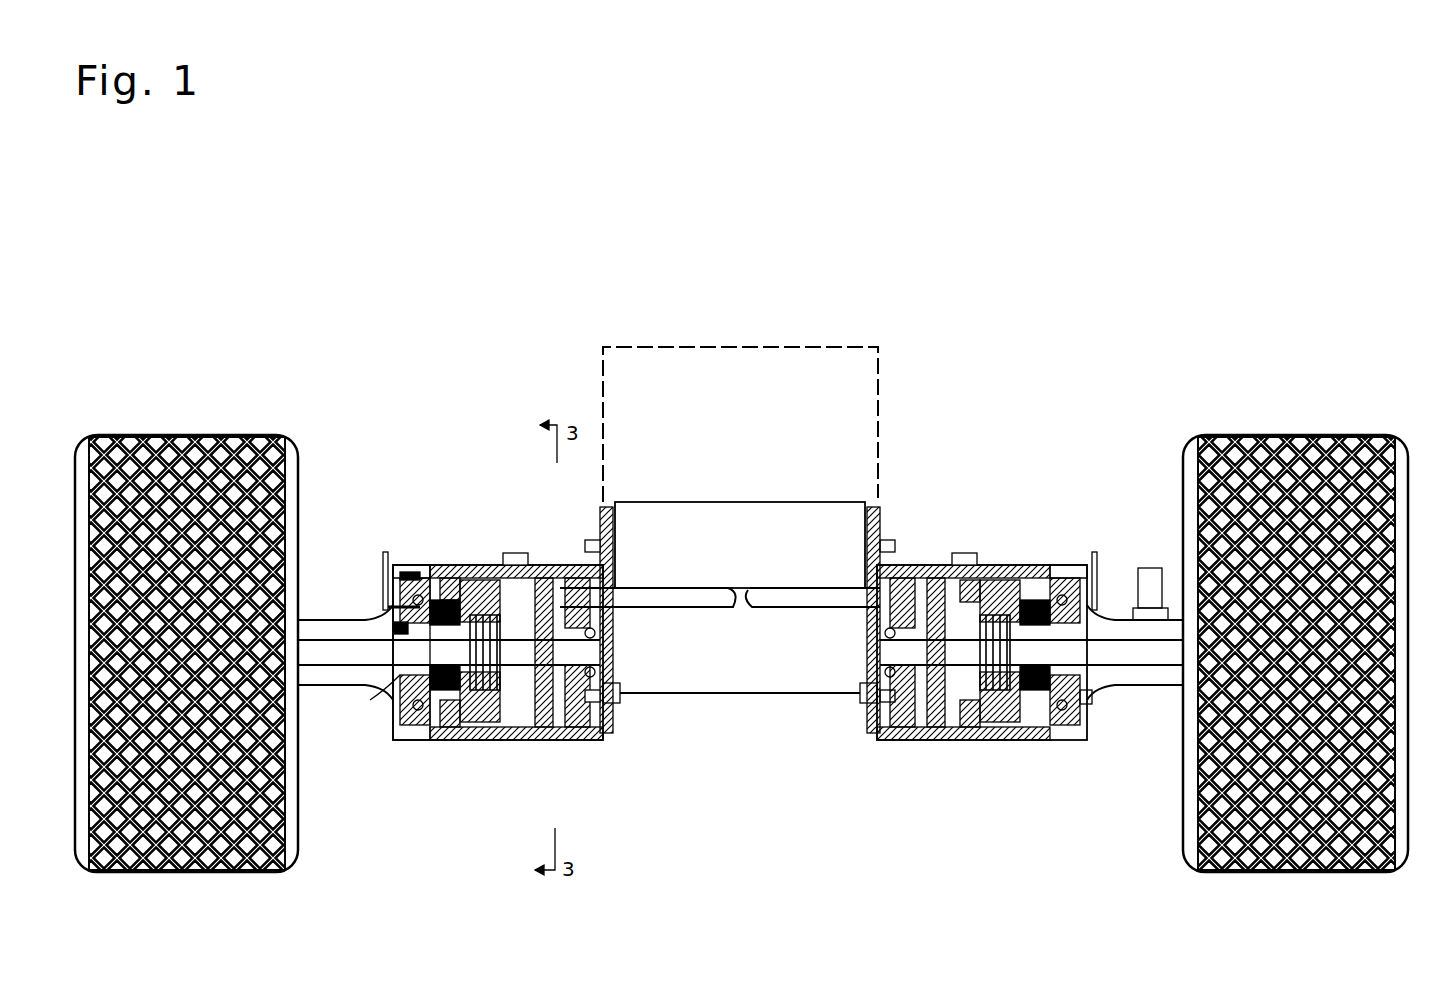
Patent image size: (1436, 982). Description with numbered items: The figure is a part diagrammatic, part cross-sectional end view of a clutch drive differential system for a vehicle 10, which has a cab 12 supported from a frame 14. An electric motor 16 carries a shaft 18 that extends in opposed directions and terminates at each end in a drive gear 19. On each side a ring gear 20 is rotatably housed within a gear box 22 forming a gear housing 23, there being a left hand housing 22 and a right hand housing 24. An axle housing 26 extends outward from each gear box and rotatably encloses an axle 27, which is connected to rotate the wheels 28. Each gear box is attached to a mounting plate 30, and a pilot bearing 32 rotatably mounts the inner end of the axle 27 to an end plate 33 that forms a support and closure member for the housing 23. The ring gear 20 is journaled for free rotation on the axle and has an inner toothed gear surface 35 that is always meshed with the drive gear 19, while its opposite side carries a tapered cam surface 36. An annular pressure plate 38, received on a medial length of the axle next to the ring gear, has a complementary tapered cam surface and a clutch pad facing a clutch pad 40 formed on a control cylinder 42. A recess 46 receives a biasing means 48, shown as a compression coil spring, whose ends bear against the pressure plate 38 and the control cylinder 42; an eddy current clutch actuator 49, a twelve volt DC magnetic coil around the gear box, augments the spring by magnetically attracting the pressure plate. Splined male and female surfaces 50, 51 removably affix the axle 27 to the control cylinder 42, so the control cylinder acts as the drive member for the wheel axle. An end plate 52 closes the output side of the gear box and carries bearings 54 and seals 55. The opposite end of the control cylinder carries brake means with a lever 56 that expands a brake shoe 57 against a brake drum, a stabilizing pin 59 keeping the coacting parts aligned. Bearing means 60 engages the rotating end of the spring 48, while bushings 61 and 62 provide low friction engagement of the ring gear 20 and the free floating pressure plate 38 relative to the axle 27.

The vehicle 10 is at (945, 470).
The cab 12 is at (862, 347).
The frame 14 is at (1138, 615).
The electric motor 16 is at (786, 502).
The shaft 18 is at (648, 597).
The drive gear 19 is at (922, 565).
The ring gear 20 is at (940, 565).
The gear box 22 is at (488, 565).
The gear housing 23 is at (520, 553).
The right hand housing 24 is at (1012, 565).
The axle housing 26 is at (350, 668).
The axle 27 is at (320, 686).
The wheels 28 is at (298, 480).
The mounting plate 30 is at (615, 672).
The pilot bearing 32 is at (613, 628).
The end plate 33 is at (605, 718).
The inner toothed gear surface 35 is at (560, 742).
The tapered cam surface 36 is at (530, 742).
The annular pressure plate 38 is at (515, 742).
The clutch pad 40 is at (505, 742).
The control cylinder 42 is at (462, 565).
The recess 46 is at (485, 742).
The biasing means 48 is at (472, 742).
The eddy current clutch actuator 49 is at (960, 553).
The splined male surface 50 is at (398, 632).
The splined female surface 51 is at (425, 650).
The end plate 52 is at (420, 565).
The bearings 54 is at (392, 620).
The seals 55 is at (400, 675).
The lever 56 is at (383, 580).
The brake shoe 57 is at (445, 565).
The stabilizing pin 59 is at (540, 565).
The bearing means 60 is at (982, 565).
The bushing 61 is at (865, 683).
The bushing 62 is at (933, 742).